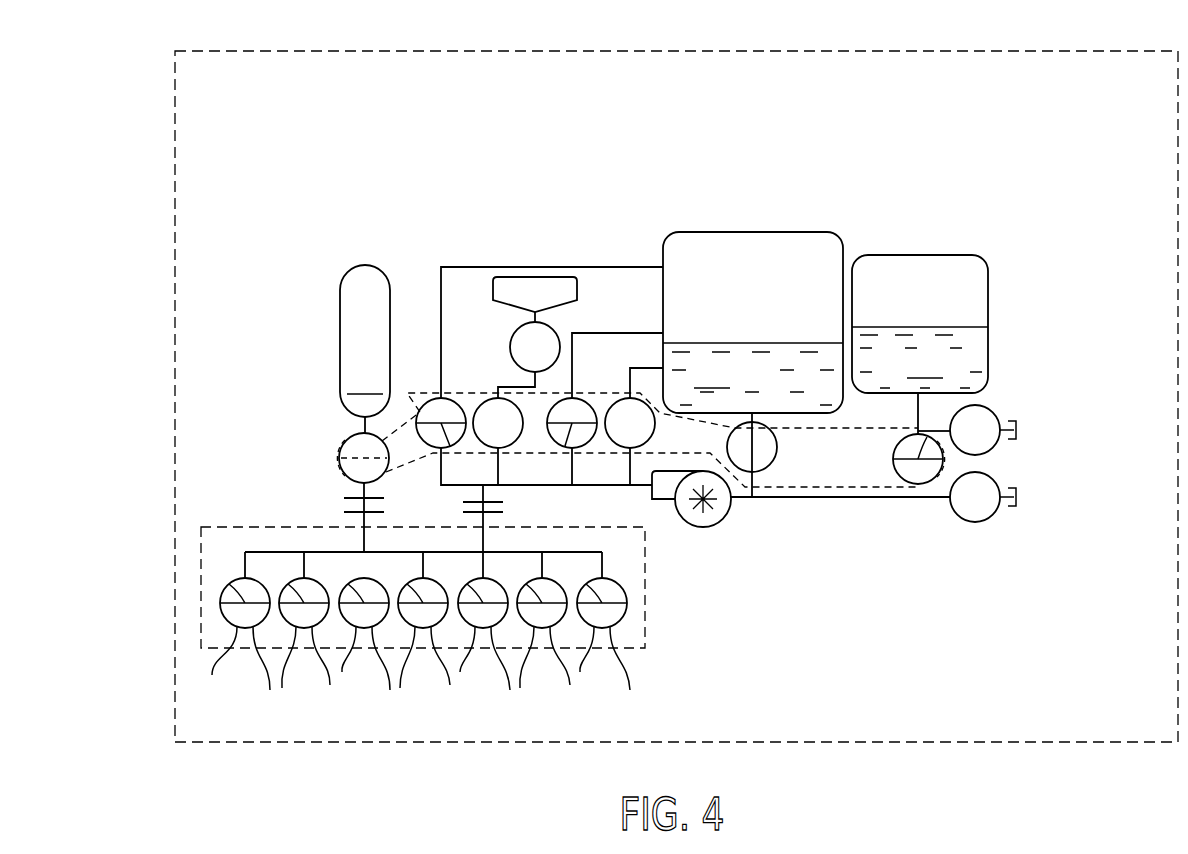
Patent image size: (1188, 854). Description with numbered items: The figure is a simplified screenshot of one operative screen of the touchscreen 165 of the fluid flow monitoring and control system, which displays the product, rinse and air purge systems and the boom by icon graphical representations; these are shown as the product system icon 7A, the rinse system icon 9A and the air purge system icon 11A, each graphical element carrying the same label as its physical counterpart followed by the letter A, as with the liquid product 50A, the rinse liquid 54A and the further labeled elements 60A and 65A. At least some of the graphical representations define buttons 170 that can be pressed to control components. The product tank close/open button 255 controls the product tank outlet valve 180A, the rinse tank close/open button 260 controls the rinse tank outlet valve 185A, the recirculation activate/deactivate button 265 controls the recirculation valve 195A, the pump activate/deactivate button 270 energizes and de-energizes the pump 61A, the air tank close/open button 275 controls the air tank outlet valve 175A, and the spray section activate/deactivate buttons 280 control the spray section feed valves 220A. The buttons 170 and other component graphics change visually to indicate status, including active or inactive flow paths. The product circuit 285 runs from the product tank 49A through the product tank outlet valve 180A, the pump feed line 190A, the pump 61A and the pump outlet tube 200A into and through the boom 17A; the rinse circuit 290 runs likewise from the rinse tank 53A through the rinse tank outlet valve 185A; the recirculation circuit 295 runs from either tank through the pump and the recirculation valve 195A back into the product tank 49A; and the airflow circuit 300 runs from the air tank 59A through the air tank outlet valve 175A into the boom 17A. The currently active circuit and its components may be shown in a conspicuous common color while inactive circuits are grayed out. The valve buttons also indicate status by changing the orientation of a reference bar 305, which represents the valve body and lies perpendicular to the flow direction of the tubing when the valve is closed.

The touchscreen 165 is at (290, 47).
The air purge system icon 11A is at (330, 290).
The air tank 59A is at (330, 325).
The accumulator fluid volume 60A is at (365, 383).
The recirculation valve 195A is at (422, 396).
The recirculation circuit 295 is at (600, 331).
The product system icon 7A is at (761, 268).
The product tank 49A is at (761, 304).
The liquid product 50A is at (753, 374).
The rinse system icon 9A is at (941, 270).
The rinse tank 53A is at (941, 305).
The rinse liquid 54A is at (920, 357).
The recirculation activate/deactivate button 265 is at (565, 394).
The air tank outlet valve 175A is at (340, 437).
The air tank close/open button 275 is at (338, 458).
The airflow circuit 300 is at (358, 520).
The reference bar 305 is at (340, 470).
The buttons 170 is at (226, 545).
The manifold 65A is at (442, 550).
The pump outlet tube 200A is at (598, 488).
The pump 61A is at (731, 512).
The pump activate/deactivate button 270 is at (708, 528).
The product tank close/open button 255 is at (726, 432).
The product circuit 285 is at (765, 484).
The product tank outlet valve 180A is at (778, 428).
The rinse tank outlet valve 185A is at (892, 440).
The rinse circuit 290 is at (912, 490).
The pump feed line 190A is at (843, 497).
The rinse tank close/open button 260 is at (948, 462).
The boom 17A is at (457, 646).
The spray section feed valves 220A is at (406, 640).
The spray section activate/deactivate button 280 is at (429, 672).